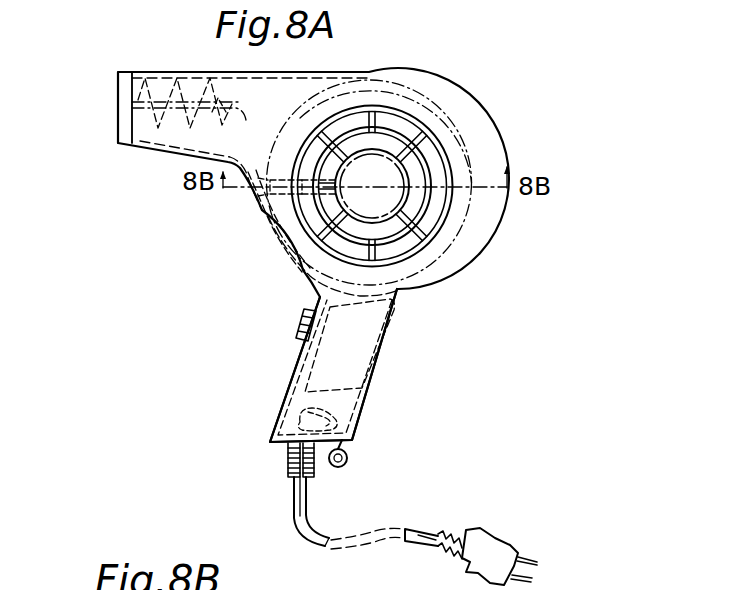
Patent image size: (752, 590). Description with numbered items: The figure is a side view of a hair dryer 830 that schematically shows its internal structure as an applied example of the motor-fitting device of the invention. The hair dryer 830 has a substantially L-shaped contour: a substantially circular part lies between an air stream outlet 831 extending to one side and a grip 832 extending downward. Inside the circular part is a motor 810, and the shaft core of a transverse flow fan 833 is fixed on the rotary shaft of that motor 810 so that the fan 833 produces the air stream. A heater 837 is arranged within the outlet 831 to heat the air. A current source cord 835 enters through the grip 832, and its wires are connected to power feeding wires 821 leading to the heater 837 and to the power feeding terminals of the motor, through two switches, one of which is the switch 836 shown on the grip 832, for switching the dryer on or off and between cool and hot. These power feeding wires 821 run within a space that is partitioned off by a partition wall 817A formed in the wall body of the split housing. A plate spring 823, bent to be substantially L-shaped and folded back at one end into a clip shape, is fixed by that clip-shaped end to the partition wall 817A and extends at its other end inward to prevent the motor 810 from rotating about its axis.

The motor 810 is at (432, 216).
The partition wall 817A is at (258, 212).
The power feeding wires 821 is at (283, 243).
The plate spring 823 is at (301, 178).
The hair dryer 830 is at (440, 283).
The air stream outlet 831 is at (118, 131).
The grip 832 is at (374, 368).
The transverse flow fan 833 is at (447, 136).
The current source cord 835 is at (312, 507).
The switch 836 is at (297, 365).
The heater 837 is at (200, 128).